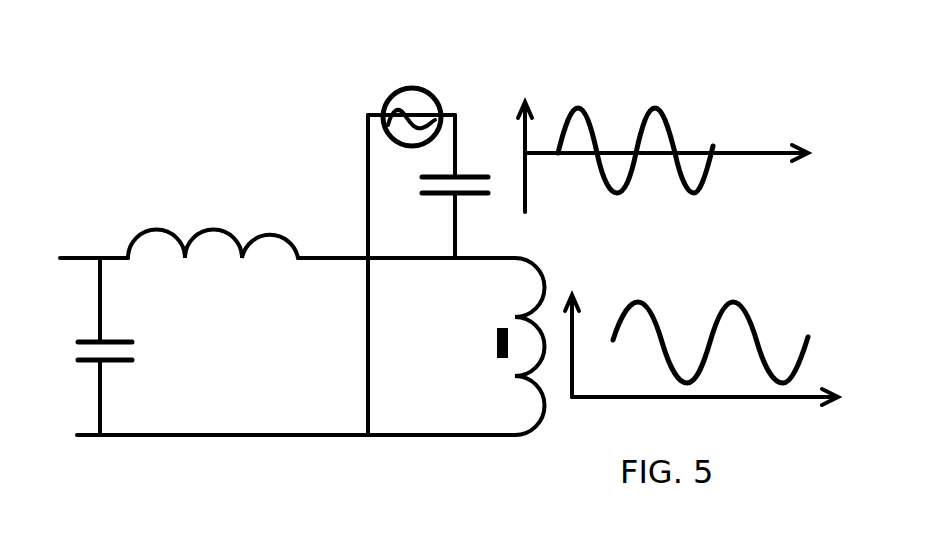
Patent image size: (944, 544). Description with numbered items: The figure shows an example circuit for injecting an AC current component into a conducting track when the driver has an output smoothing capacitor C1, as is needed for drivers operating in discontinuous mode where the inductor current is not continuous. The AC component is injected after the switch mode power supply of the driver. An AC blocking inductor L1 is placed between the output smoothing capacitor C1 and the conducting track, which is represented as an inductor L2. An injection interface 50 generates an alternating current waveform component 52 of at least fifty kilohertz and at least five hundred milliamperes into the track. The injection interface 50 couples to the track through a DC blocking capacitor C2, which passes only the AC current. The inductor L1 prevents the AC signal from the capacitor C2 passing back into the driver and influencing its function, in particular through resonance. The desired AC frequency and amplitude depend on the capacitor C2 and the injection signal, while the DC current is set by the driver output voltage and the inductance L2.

The injection interface 50 is at (408, 87).
The alternating current waveform component 52 is at (658, 108).
The AC blocking inductor L1 is at (213, 213).
The output smoothing capacitor C1 is at (123, 344).
The DC blocking capacitor C2 is at (458, 205).
The conducting track inductance L2 is at (482, 346).